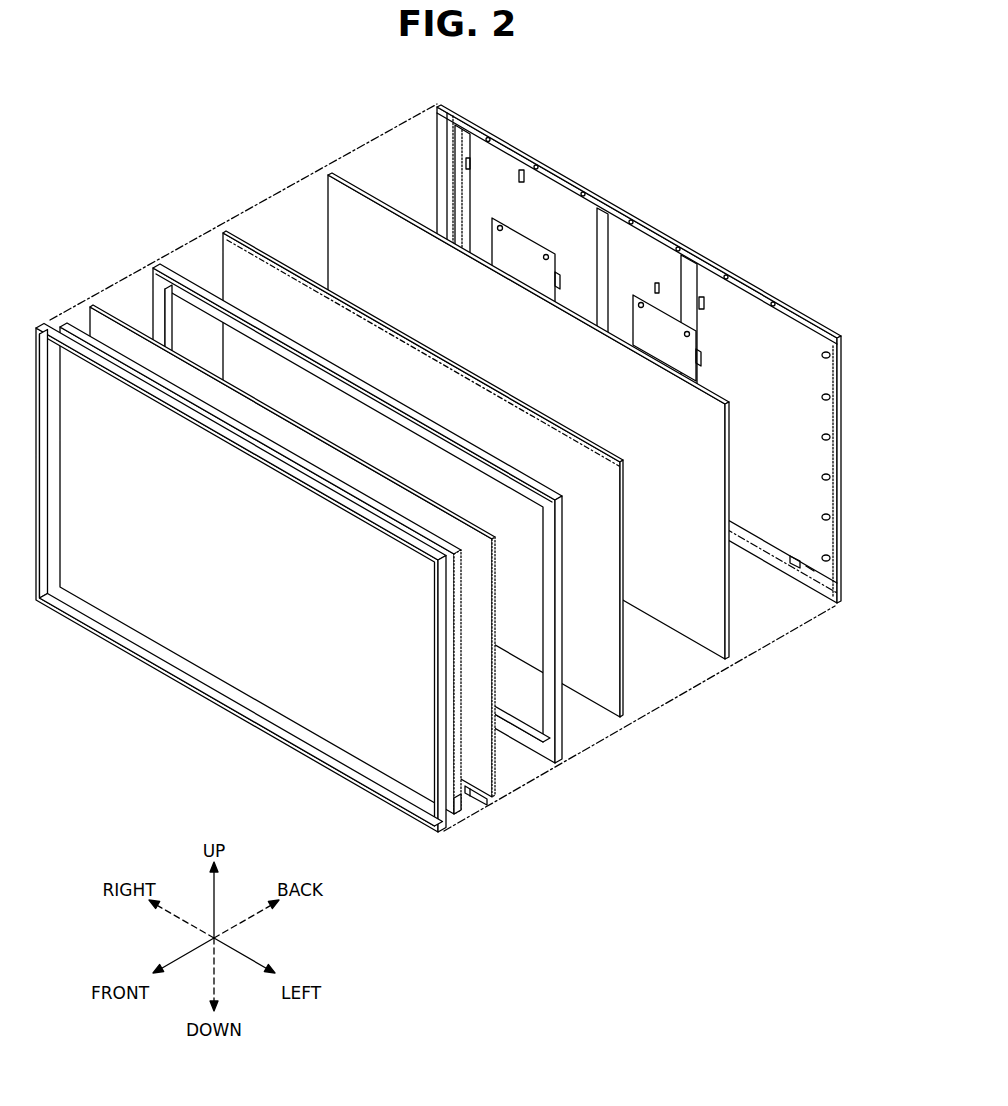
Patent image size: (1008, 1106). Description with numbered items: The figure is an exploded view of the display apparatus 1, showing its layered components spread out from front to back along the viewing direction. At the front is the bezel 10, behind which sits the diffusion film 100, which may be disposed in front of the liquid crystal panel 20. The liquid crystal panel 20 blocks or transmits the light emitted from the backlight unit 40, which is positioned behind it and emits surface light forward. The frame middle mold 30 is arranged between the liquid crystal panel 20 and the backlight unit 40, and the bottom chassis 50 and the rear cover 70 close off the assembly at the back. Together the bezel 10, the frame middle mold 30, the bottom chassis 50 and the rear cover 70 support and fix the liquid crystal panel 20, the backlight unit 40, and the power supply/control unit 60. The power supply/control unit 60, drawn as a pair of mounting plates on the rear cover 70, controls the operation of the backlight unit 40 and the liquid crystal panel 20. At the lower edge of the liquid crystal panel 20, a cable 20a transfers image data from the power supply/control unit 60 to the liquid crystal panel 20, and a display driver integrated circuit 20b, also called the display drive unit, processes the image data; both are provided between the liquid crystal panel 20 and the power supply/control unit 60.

The display apparatus 1 is at (177, 194).
The bezel 10 is at (444, 834).
The diffusion film 100 is at (466, 617).
The liquid crystal panel 20 is at (492, 797).
The cable 20a is at (482, 793).
The display driver integrated circuit 20b is at (456, 816).
The frame middle mold 30 is at (558, 764).
The backlight unit 40 is at (622, 718).
The bottom chassis 50 is at (727, 660).
The power supply/control unit 60 is at (545, 242).
The rear cover 70 is at (840, 604).